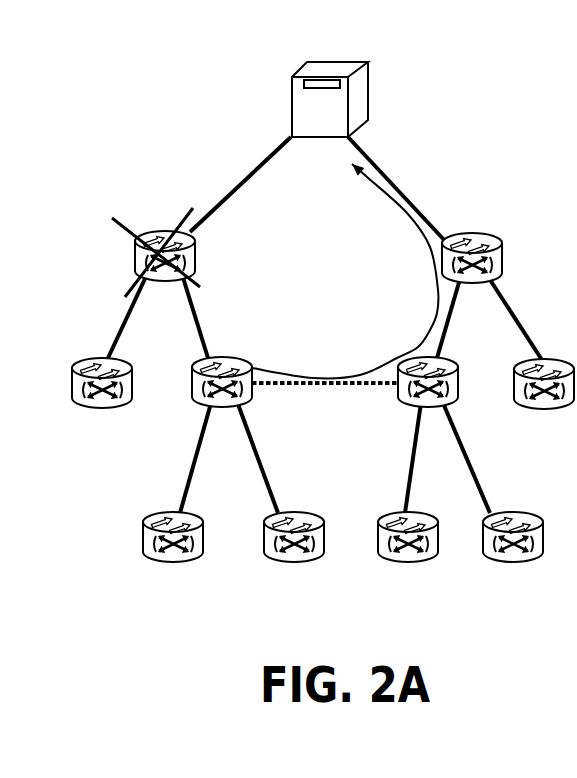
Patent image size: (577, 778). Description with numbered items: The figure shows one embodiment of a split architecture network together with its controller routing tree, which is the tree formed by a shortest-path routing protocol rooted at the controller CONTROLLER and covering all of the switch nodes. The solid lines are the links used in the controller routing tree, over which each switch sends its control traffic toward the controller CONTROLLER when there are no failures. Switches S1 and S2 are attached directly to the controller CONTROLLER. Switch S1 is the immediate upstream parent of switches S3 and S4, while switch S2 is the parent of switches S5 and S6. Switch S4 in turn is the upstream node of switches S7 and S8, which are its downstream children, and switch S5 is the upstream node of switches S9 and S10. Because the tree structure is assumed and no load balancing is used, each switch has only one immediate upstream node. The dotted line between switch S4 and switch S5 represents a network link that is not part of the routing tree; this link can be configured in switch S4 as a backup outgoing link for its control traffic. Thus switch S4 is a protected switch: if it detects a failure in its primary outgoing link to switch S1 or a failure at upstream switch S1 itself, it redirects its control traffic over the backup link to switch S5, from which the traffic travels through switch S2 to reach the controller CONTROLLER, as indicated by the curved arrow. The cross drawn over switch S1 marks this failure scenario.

The controller CONTROLLER is at (329, 84).
The switch S1 is at (156, 250).
The switch S2 is at (472, 243).
The switch S3 is at (102, 369).
The switch S4 is at (224, 369).
The switch S5 is at (426, 360).
The switch S6 is at (544, 368).
The switch S7 is at (173, 553).
The switch S8 is at (294, 553).
The switch S9 is at (408, 553).
The switch S10 is at (514, 553).